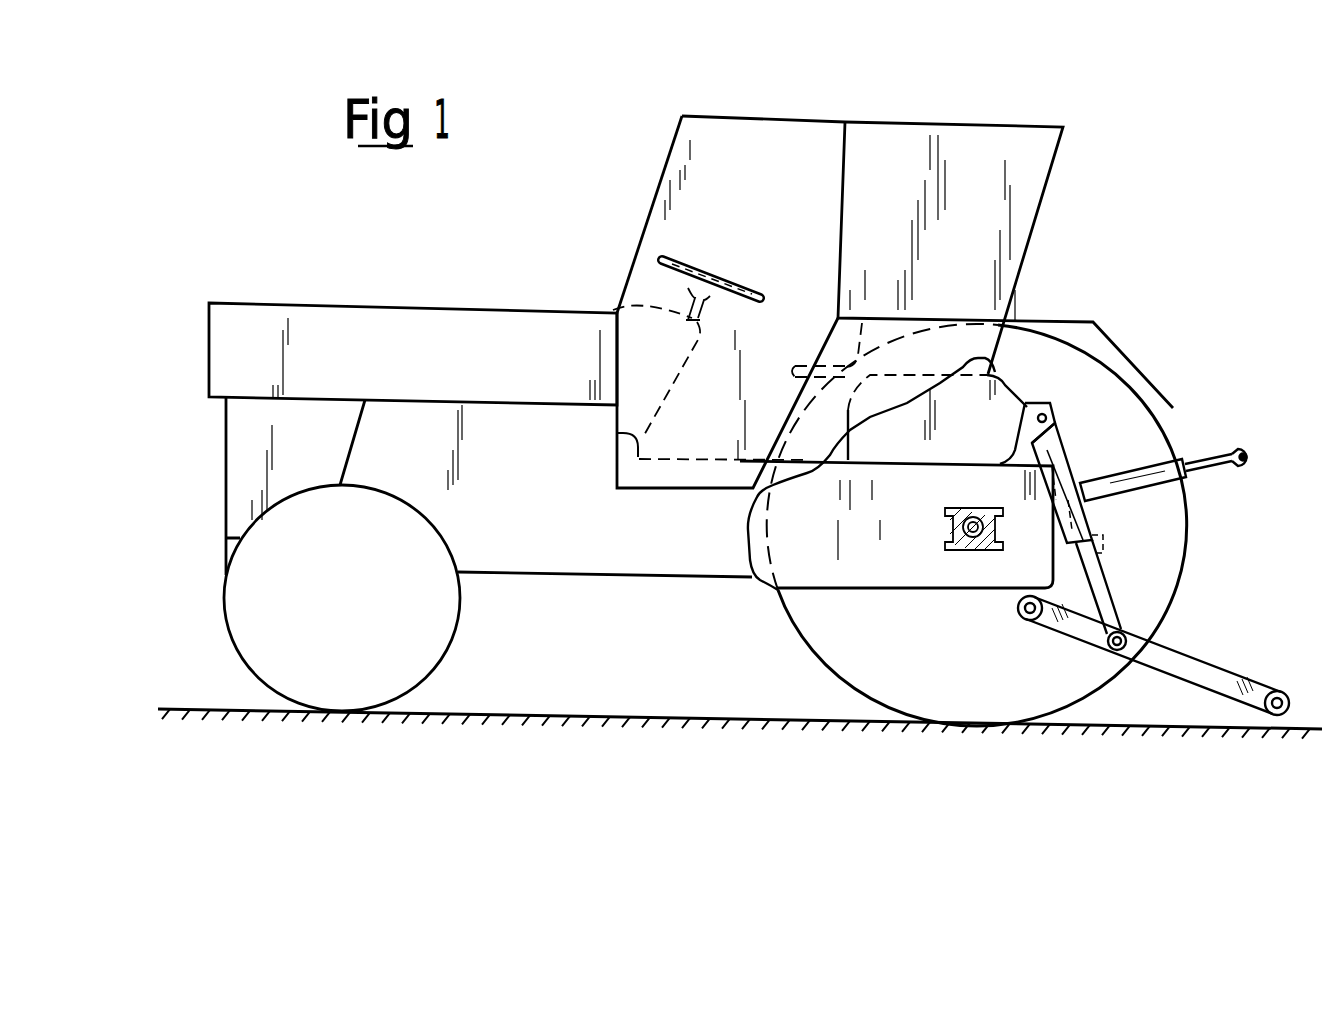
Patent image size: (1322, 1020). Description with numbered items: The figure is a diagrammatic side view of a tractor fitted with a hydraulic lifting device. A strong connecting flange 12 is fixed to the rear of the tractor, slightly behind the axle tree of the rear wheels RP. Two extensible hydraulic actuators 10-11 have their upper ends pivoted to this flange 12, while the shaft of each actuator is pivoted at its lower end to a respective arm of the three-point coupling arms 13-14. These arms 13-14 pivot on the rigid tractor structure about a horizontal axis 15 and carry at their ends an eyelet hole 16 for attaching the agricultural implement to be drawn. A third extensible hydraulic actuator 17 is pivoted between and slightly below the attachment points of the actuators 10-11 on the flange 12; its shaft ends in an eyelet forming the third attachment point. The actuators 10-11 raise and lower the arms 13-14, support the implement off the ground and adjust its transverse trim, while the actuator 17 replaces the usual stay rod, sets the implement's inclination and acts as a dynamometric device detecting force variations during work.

The rear wheels RP is at (1160, 550).
The connecting flange 12 is at (1040, 403).
The extensible hydraulic actuators 10-11 is at (1090, 513).
The third extensible hydraulic actuator 17 is at (1153, 468).
The arms 13-14 is at (1187, 663).
The horizontal axis 15 is at (1025, 618).
The eyelet hole 16 is at (1300, 707).